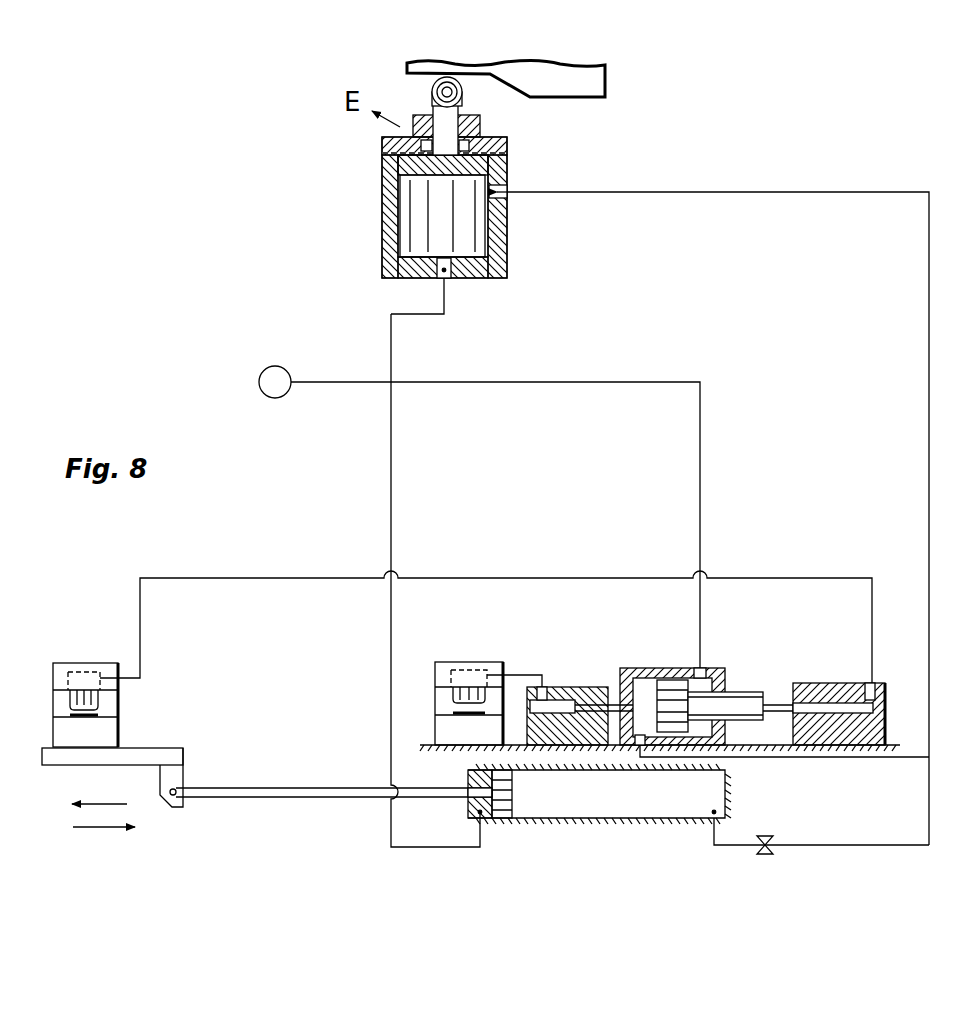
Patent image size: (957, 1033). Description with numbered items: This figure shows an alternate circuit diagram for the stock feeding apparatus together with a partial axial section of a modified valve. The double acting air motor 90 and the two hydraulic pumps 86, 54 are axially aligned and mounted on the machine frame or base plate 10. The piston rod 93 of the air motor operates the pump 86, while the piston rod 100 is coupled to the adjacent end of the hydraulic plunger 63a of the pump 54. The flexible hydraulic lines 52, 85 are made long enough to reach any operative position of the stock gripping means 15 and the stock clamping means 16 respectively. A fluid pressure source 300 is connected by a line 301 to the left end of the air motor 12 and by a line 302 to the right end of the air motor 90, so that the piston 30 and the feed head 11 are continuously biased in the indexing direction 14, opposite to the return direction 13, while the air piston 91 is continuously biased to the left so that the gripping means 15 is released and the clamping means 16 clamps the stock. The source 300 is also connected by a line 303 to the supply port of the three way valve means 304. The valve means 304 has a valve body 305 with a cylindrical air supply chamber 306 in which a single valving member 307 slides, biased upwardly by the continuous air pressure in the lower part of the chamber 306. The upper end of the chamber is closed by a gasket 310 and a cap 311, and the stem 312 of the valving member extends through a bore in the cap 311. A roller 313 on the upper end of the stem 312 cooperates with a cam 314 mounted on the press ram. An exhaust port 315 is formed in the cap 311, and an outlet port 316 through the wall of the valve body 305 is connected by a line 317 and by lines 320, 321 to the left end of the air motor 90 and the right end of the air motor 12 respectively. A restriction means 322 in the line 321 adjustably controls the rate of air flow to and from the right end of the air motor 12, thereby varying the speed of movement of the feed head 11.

The base plate 10 is at (898, 743).
The feed head 11 is at (157, 752).
The air motor 12 is at (655, 823).
The direction 13 is at (103, 804).
The indexing direction 14 is at (108, 827).
The stock gripping means 15 is at (62, 658).
The stock clamping means 16 is at (490, 655).
The piston 30 is at (508, 792).
The flexible hydraulic line 52 is at (814, 578).
The hydraulic pump 54 is at (840, 681).
The hydraulic plunger 63a is at (778, 703).
The flexible hydraulic line 85 is at (519, 674).
The hydraulic pump 86 is at (571, 686).
The double acting air motor 90 is at (650, 666).
The air piston 91 is at (672, 682).
The piston rod 93 is at (613, 703).
The piston rod 100 is at (738, 690).
The fluid pressure source 300 is at (268, 398).
The line 301 is at (392, 470).
The line 302 is at (595, 386).
The line 303 is at (422, 322).
The three way valve means 304 is at (512, 236).
The valve body 305 is at (392, 268).
The air supply chamber 306 is at (413, 214).
The valving member 307 is at (400, 164).
The gasket 310 is at (507, 153).
The cap 311 is at (507, 137).
The stem 312 is at (450, 122).
The roller 313 is at (432, 89).
The cam 314 is at (594, 84).
The exhaust port 315 is at (420, 142).
The outlet port 316 is at (507, 188).
The line 317 is at (752, 195).
The line 320 is at (790, 760).
The line 321 is at (870, 845).
The restriction means 322 is at (782, 822).